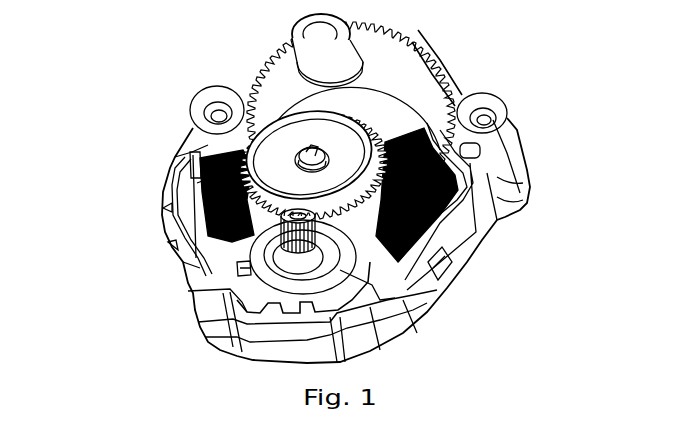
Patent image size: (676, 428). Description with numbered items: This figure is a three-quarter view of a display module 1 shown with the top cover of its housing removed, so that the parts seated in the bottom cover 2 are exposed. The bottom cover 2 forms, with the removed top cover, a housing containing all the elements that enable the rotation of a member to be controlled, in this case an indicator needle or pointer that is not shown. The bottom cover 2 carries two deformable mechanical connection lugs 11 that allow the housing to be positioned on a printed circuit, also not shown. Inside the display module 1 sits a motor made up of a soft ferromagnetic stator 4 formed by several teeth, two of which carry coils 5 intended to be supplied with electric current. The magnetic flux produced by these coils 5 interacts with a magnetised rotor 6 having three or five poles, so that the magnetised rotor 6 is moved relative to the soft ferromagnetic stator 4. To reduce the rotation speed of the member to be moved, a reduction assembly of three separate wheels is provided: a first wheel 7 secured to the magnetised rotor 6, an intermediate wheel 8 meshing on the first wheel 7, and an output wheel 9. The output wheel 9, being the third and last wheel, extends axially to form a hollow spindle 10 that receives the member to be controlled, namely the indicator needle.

The display module 1 is at (522, 123).
The bottom cover 2 is at (500, 217).
The soft ferromagnetic stator 4 is at (356, 264).
The coils 5 is at (196, 183).
The magnetised rotor 6 is at (240, 282).
The first wheel 7 is at (263, 246).
The intermediate wheel 8 is at (272, 143).
The output wheel 9 is at (257, 75).
The hollow spindle 10 is at (310, 35).
The deformable mechanical connection lugs 11 is at (490, 165).